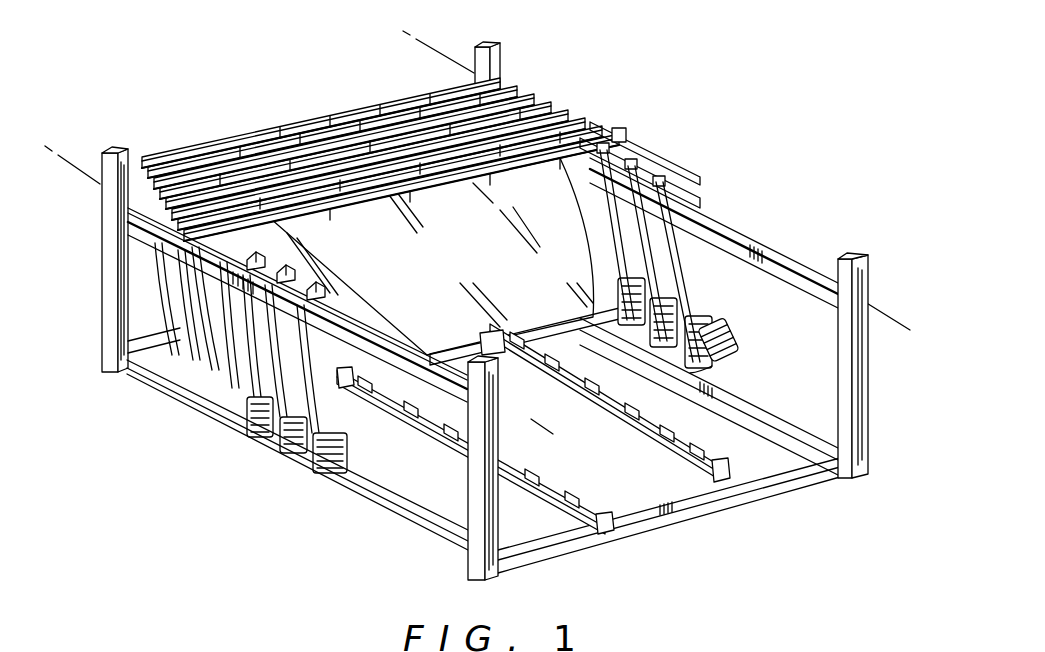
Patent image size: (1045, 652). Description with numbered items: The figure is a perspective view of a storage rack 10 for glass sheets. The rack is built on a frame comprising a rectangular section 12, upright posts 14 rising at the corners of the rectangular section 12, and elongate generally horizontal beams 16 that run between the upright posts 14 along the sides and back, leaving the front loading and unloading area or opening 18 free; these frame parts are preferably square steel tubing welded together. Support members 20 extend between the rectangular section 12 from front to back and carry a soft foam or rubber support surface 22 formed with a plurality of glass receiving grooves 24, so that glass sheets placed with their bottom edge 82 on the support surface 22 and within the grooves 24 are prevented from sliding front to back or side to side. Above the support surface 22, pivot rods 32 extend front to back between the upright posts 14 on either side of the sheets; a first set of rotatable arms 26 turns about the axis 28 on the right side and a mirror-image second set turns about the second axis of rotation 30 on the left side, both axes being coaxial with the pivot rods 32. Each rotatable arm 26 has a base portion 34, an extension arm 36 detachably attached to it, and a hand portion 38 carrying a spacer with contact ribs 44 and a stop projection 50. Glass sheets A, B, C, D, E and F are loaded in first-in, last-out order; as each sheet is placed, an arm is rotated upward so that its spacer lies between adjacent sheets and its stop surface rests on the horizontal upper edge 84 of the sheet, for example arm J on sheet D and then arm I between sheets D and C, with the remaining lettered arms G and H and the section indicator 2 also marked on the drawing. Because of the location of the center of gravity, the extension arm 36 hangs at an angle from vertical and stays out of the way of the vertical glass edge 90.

The storage rack 10 is at (240, 459).
The rectangular section 12 is at (156, 343).
The upright posts 14 is at (476, 60).
The beams 16 is at (360, 491).
The front loading and unloading area or opening 18 is at (687, 533).
The support members 20 is at (430, 440).
The support surface 22 is at (580, 384).
The glass receiving grooves 24 is at (566, 492).
The rotatable arms 26 is at (400, 93).
The axis 28 is at (458, 86).
The second axis of rotation 30 is at (78, 150).
The pivot rods 32 is at (367, 322).
The base portion 34 is at (626, 141).
The extension arm 36 is at (605, 122).
The hand portion 38 is at (422, 200).
The contact ribs 44 is at (731, 338).
The stop projection 50 is at (444, 195).
The bottom edge 82 is at (546, 334).
The horizontal upper edge 84 is at (626, 134).
The vertical glass edge 90 is at (242, 348).
The section line 2 is at (331, 123).
The glass sheet A is at (535, 288).
The glass sheet B is at (262, 378).
The glass sheet C is at (238, 352).
The glass sheet D is at (213, 342).
The glass sheet E is at (180, 276).
The glass sheet F is at (170, 270).
The arm G is at (128, 358).
The arm H is at (185, 255).
The arm I is at (205, 243).
The arm J is at (160, 232).